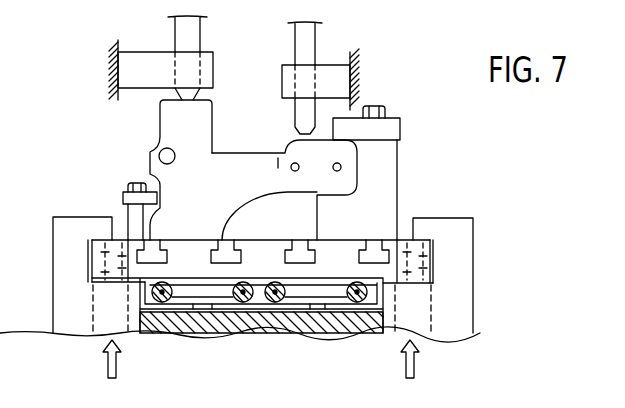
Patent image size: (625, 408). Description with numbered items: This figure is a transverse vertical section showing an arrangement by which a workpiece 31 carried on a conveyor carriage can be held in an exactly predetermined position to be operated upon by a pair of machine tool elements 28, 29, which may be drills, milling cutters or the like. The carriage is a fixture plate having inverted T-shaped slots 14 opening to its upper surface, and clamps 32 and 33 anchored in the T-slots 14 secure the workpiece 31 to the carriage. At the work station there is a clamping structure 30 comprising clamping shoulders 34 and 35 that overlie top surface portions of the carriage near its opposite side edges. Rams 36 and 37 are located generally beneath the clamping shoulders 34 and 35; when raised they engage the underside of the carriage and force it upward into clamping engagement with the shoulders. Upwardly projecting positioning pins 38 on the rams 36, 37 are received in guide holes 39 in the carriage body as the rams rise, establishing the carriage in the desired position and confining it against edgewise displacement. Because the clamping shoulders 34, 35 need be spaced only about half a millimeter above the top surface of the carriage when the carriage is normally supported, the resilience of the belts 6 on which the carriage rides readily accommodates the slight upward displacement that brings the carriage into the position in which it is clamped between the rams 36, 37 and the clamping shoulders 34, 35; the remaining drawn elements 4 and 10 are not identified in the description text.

The roller cage 4 is at (297, 299).
The belts 6 is at (163, 301).
The arm 10 is at (361, 232).
The inverted T-shaped slots 14 is at (297, 236).
The machine tool element 28 is at (186, 31).
The machine tool element 29 is at (312, 41).
The clamping structure 30 is at (484, 290).
The workpiece 31 is at (213, 203).
The clamp 32 is at (134, 223).
The clamp 33 is at (389, 162).
The clamping shoulder 34 is at (95, 232).
The clamping shoulder 35 is at (428, 229).
The ram 36 is at (86, 312).
The ram 37 is at (430, 311).
The positioning pin 38 is at (92, 268).
The guide hole 39 is at (88, 242).